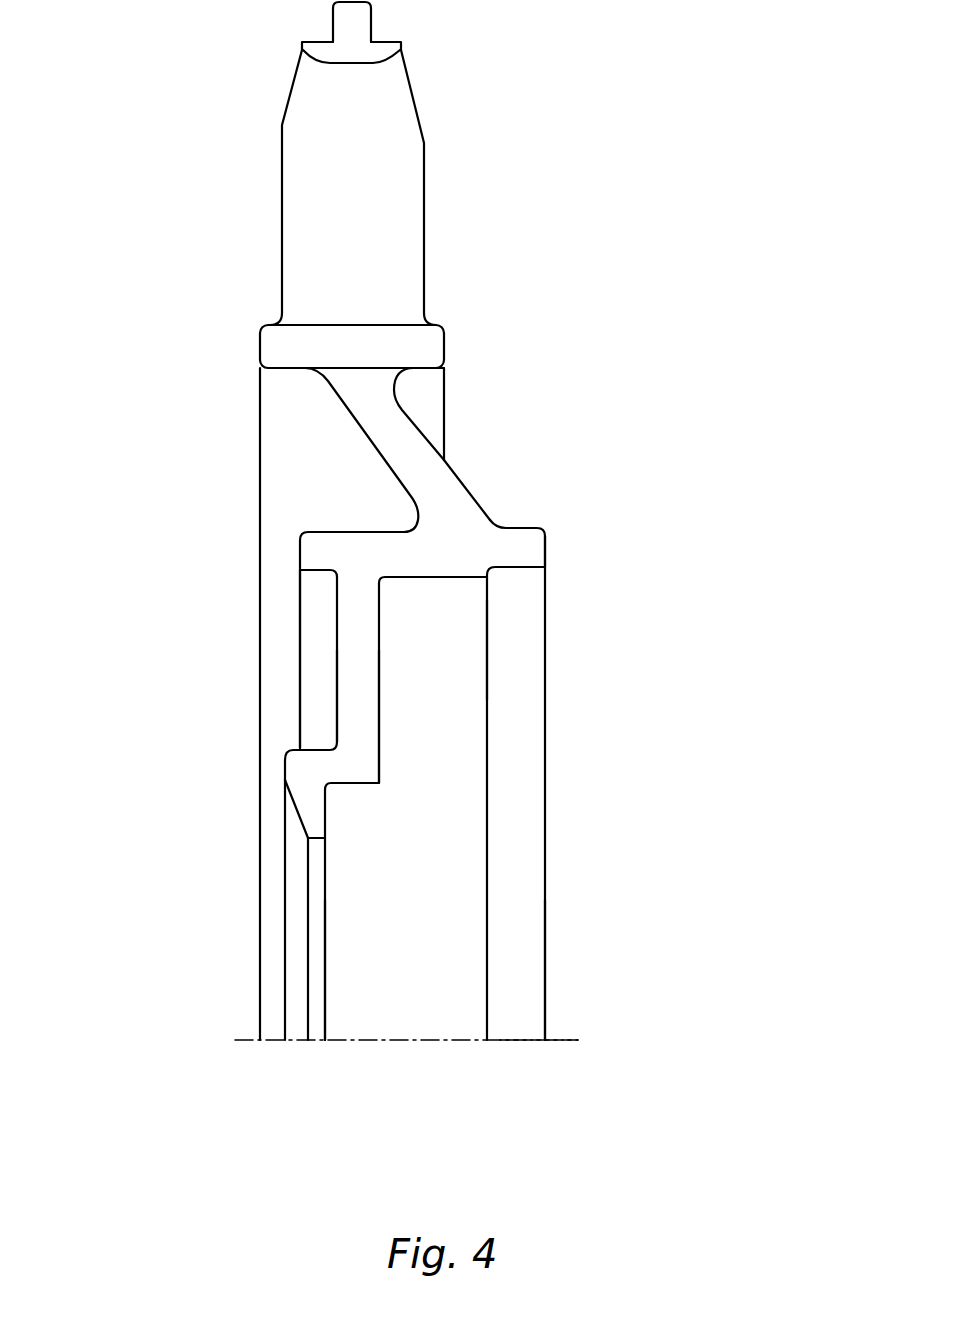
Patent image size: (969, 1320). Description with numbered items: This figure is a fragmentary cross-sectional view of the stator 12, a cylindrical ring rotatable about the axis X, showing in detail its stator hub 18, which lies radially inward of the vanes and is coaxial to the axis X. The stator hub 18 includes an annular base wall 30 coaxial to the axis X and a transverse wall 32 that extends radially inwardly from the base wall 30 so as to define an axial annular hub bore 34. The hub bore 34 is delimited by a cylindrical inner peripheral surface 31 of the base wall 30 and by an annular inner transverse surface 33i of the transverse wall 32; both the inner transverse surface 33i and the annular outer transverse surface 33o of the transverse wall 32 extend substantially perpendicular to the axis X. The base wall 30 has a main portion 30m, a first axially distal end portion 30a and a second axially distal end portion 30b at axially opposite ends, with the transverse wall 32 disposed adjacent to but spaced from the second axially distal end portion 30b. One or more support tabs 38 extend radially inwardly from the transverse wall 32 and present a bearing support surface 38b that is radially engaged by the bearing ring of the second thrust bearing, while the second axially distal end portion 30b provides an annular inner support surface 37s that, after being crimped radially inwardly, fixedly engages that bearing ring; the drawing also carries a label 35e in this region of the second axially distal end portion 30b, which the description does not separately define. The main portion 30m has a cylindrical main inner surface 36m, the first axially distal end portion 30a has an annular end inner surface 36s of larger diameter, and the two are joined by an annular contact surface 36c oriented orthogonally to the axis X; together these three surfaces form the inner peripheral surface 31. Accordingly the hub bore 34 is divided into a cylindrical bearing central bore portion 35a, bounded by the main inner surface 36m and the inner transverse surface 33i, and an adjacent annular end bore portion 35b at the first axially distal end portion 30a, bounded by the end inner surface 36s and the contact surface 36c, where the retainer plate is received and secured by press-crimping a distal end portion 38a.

The stator 12 is at (465, 257).
The stator hub 18 is at (492, 523).
The annular base wall 30 is at (380, 547).
The main portion 30m is at (440, 555).
The first axially distal end portion 30a is at (530, 545).
The second axially distal end portion 30b is at (310, 550).
The cylindrical inner peripheral surface 31 is at (450, 583).
The transverse wall 32 is at (338, 678).
The inner transverse surface 33i is at (382, 692).
The outer transverse surface 33o is at (338, 703).
The axial annular hub bore 34 is at (407, 945).
The cylindrical bearing central bore portion 35a is at (377, 1017).
The annular end bore portion 35b is at (525, 993).
The end section 35e is at (315, 662).
The main inner surface 36m is at (422, 583).
The end inner surface 36s is at (522, 570).
The annular contact surface 36c is at (490, 573).
The inner support surface 37s is at (317, 573).
The support tabs 38 is at (310, 812).
The distal end portion 38a is at (322, 747).
The bearing support surface 38b is at (328, 817).
The axis X is at (528, 1040).